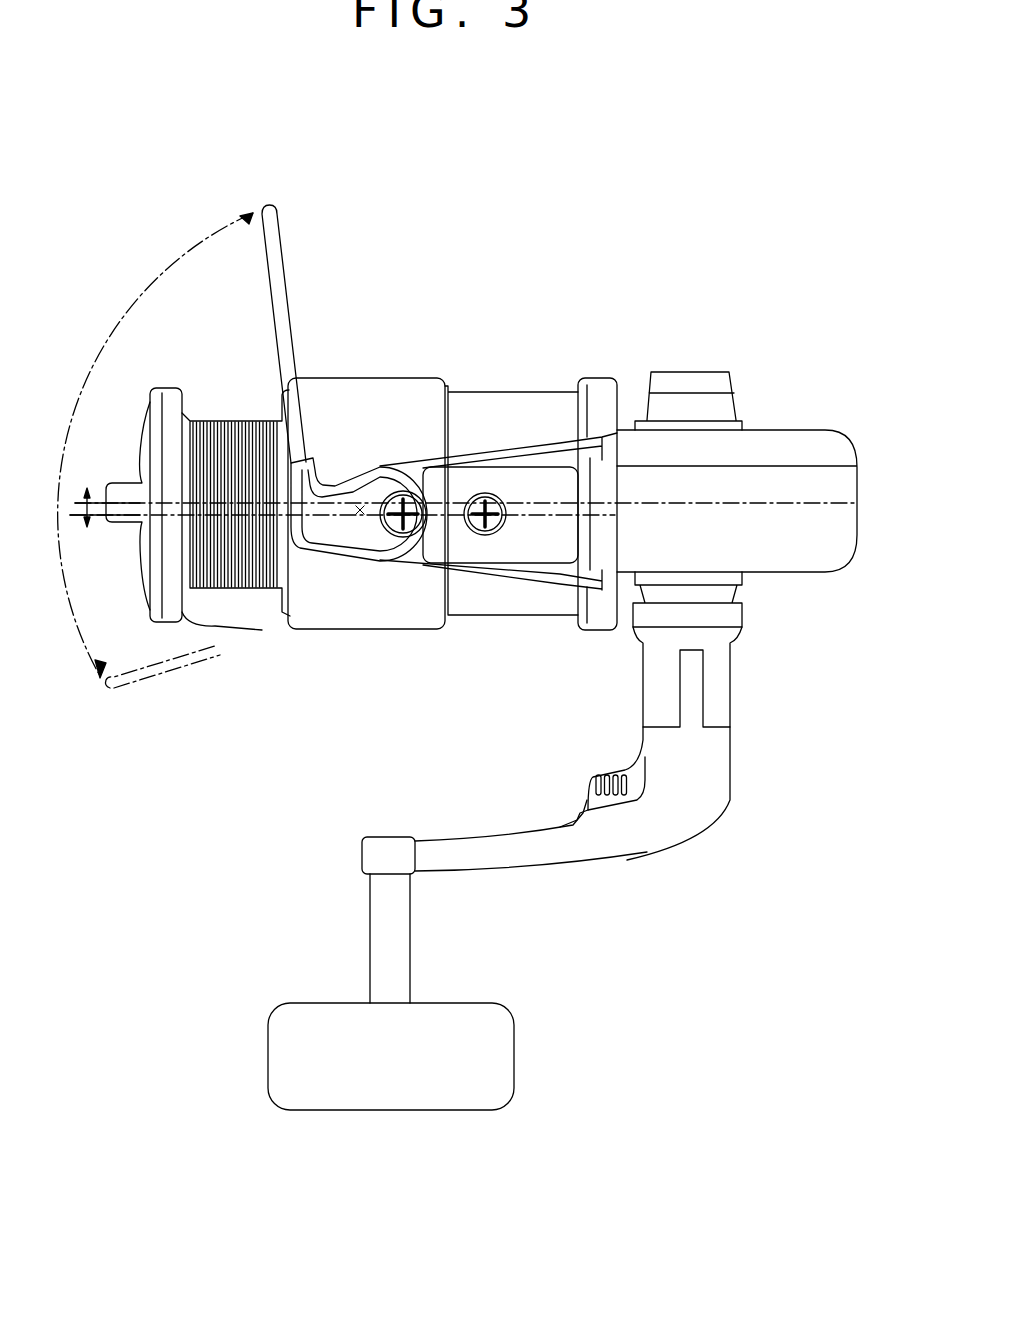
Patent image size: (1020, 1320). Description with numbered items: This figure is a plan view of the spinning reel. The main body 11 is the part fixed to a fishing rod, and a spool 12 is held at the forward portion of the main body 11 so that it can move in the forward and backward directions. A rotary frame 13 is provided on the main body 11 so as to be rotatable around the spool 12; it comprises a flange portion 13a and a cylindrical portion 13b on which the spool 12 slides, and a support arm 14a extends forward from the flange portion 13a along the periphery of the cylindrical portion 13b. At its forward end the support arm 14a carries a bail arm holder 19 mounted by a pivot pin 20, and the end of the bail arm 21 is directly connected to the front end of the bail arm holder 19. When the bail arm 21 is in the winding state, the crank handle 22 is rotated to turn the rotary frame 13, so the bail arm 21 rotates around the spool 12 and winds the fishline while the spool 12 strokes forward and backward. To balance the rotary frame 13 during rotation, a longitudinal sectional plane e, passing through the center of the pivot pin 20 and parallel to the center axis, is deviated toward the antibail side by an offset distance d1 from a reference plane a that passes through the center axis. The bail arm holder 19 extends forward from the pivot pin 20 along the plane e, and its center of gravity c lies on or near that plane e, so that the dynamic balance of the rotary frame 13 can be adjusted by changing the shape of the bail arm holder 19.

The main body 11 is at (780, 432).
The spool 12 is at (200, 622).
The rotary frame 13 is at (493, 451).
The flange portion 13a is at (607, 378).
The cylindrical portion 13b is at (508, 390).
The support arm 14a is at (510, 548).
The bail arm holder 19 is at (345, 555).
The pivot pin 20 is at (398, 480).
The bail arm 21 is at (283, 229).
The crank handle 22 is at (470, 1103).
The reference plane a is at (98, 492).
The center of gravity c is at (357, 500).
The longitudinal sectional plane e is at (98, 523).
The offset distance d1 is at (80, 521).